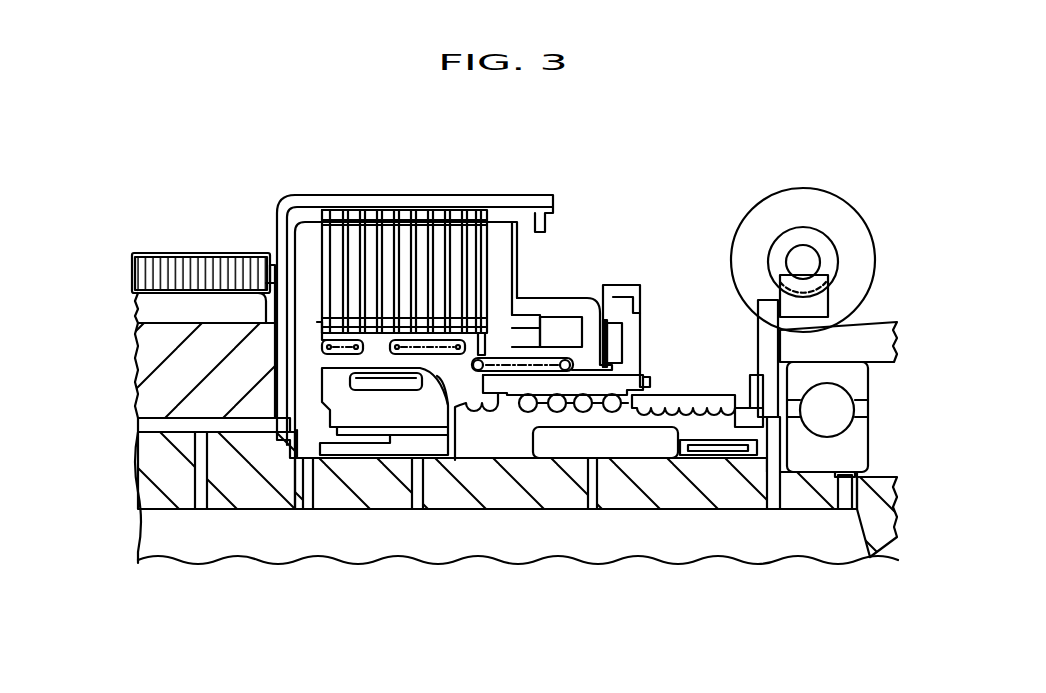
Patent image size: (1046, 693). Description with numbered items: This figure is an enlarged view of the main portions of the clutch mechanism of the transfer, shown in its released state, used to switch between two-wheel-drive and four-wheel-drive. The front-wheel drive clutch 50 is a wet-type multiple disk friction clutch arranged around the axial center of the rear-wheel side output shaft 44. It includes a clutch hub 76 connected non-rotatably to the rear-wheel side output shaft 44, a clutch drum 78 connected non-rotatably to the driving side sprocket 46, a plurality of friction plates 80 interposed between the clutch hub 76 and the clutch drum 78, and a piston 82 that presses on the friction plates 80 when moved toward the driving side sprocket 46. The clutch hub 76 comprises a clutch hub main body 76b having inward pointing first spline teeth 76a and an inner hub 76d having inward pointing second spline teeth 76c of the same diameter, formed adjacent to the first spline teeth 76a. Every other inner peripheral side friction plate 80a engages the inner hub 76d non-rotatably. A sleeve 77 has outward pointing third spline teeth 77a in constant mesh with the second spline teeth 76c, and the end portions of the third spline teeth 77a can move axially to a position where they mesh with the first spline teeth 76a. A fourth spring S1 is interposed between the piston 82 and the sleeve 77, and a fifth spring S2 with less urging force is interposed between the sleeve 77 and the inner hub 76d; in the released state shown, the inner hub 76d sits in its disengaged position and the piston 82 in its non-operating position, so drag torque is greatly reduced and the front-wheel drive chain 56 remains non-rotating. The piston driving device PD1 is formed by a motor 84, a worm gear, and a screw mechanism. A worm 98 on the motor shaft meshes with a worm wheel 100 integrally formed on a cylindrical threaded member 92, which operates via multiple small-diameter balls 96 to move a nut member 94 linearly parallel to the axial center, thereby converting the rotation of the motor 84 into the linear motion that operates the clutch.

The front-wheel drive clutch 50 is at (340, 122).
The driving side sprocket 46 is at (142, 353).
The front-wheel drive chain 56 is at (242, 262).
The rear-wheel side output shaft 44 is at (180, 502).
The friction plates 80 is at (486, 244).
The inner peripheral side friction plate 80a is at (332, 265).
The clutch drum 78 is at (393, 200).
The piston 82 is at (552, 310).
The nut member 94 is at (633, 353).
The clutch hub 76 is at (343, 400).
The first spline teeth 76a is at (340, 373).
The clutch hub main body 76b is at (302, 428).
The second spline teeth 76c is at (381, 380).
The inner hub 76d is at (392, 392).
The sleeve 77 is at (427, 380).
The third spline teeth 77a is at (447, 372).
The fourth spring S1 is at (565, 370).
The fifth spring S2 is at (463, 343).
The balls 96 is at (615, 407).
The cylindrical threaded member 92 is at (710, 412).
The piston driving device PD1 is at (822, 187).
The motor 84 is at (763, 215).
The worm 98 is at (830, 250).
The worm wheel 100 is at (820, 307).